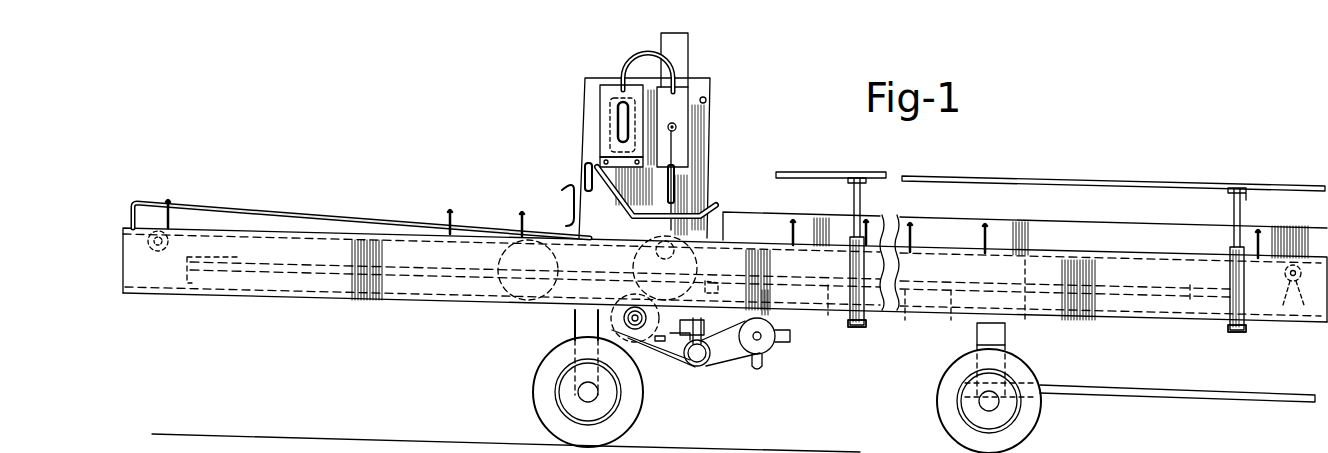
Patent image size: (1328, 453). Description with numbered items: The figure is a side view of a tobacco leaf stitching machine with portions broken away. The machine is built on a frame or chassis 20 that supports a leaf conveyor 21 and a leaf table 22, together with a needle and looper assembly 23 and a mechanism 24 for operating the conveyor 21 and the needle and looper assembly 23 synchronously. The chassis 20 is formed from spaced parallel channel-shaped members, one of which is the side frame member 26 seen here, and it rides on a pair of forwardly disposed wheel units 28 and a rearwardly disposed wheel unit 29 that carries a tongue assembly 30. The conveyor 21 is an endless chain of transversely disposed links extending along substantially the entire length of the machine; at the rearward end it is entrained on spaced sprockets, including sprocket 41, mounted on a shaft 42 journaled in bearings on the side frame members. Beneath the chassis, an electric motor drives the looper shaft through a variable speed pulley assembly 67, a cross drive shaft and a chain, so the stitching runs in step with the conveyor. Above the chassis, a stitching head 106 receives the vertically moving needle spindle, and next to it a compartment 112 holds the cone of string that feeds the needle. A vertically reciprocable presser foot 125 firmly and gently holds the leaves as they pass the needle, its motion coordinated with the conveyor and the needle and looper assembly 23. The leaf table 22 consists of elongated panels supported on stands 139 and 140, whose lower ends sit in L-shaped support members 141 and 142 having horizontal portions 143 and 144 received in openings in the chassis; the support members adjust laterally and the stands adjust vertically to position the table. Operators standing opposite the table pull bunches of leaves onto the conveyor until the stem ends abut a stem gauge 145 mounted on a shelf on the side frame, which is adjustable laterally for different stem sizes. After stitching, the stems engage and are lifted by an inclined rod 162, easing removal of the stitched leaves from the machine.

The frame or chassis 20 is at (458, 304).
The leaf conveyor 21 is at (300, 236).
The leaf table 22 is at (1086, 178).
The needle and looper assembly 23 is at (676, 190).
The mechanism for operating the conveyor and the needle and looper assembly 24 is at (712, 130).
The side frame member 26 is at (327, 292).
The forwardly disposed wheel unit 28 is at (630, 412).
The rearwardly disposed wheel unit 29 is at (1035, 424).
The tongue assembly 30 is at (1178, 398).
The sprocket 41 is at (1286, 301).
The shaft 42 is at (1285, 275).
The variable speed pulley assembly 67 is at (712, 362).
The stitching head 106 is at (693, 95).
The compartment for a cone of string 112 is at (598, 133).
The presser foot 125 is at (627, 216).
The stand 139 is at (862, 203).
The stand 140 is at (1244, 212).
The L-shaped support member 141 is at (850, 266).
The L-shaped support member 142 is at (1230, 276).
The horizontal portion 143 is at (845, 327).
The horizontal portion 144 is at (1222, 333).
The stem gauge 145 is at (1178, 217).
The inclined rod 162 is at (372, 213).